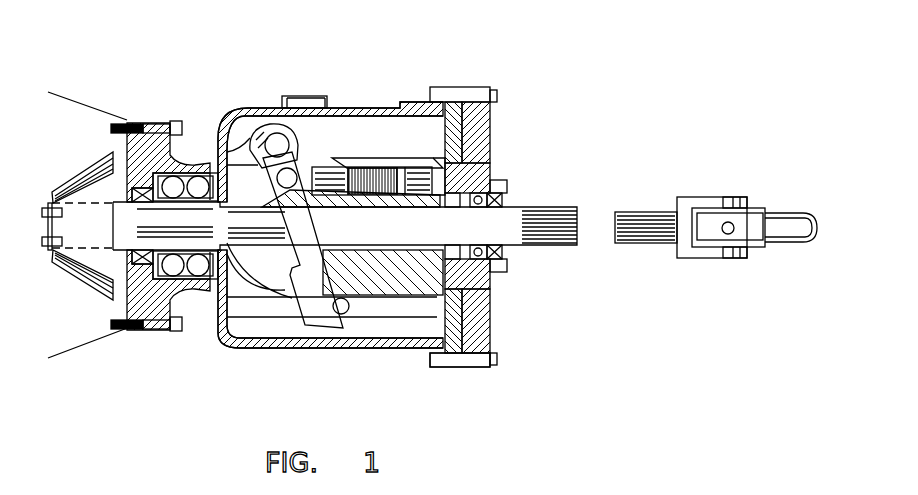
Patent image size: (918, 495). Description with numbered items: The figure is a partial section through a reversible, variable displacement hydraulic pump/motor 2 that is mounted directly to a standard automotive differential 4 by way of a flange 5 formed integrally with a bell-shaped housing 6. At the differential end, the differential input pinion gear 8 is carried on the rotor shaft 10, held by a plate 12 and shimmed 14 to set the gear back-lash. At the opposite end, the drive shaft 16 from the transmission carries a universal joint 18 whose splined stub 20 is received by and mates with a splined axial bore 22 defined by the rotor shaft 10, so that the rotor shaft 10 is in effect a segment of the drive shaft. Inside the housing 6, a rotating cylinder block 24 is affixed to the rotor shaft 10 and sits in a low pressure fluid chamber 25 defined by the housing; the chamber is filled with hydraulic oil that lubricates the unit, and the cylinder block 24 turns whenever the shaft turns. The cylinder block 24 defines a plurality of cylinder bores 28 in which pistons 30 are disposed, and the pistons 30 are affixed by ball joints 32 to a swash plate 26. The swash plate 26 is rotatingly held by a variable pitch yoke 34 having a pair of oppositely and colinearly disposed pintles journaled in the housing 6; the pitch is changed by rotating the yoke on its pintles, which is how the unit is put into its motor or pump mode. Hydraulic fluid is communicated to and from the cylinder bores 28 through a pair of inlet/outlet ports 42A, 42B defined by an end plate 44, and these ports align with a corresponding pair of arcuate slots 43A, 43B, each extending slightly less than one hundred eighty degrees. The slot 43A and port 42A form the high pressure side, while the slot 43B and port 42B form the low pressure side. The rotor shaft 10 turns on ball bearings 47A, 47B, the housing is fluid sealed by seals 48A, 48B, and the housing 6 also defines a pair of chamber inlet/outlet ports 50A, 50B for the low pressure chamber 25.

The hydraulic pump/motor 2 is at (227, 80).
The automotive differential 4 is at (70, 100).
The flange 5 is at (143, 334).
The bell-shaped housing 6 is at (238, 347).
The differential input pinion gear 8 is at (77, 176).
The rotor shaft 10 is at (127, 240).
The plate 12 is at (45, 252).
The shim 14 is at (126, 155).
The drive shaft 16 is at (787, 213).
The universal joint 18 is at (698, 197).
The splined stub 20 is at (628, 212).
The splined axial bore 22 is at (577, 230).
The rotating cylinder block 24 is at (368, 282).
The low pressure fluid chamber 25 is at (423, 305).
The swash plate 26 is at (288, 168).
The cylinder bores 28 is at (420, 165).
The pistons 30 is at (364, 167).
The ball joints 32 is at (310, 100).
The variable pitch yoke 34 is at (262, 130).
The inlet/outlet port 42A is at (486, 160).
The inlet/outlet port 42B is at (453, 282).
The arcuate slot 43A is at (493, 106).
The arcuate slot 43B is at (480, 295).
The end plate 44 is at (493, 364).
The ball bearing 47A is at (175, 184).
The ball bearing 47B is at (490, 180).
The seal 48A is at (130, 334).
The seal 48B is at (505, 196).
The chamber inlet/outlet port 50A is at (343, 106).
The chamber inlet/outlet port 50B is at (303, 349).